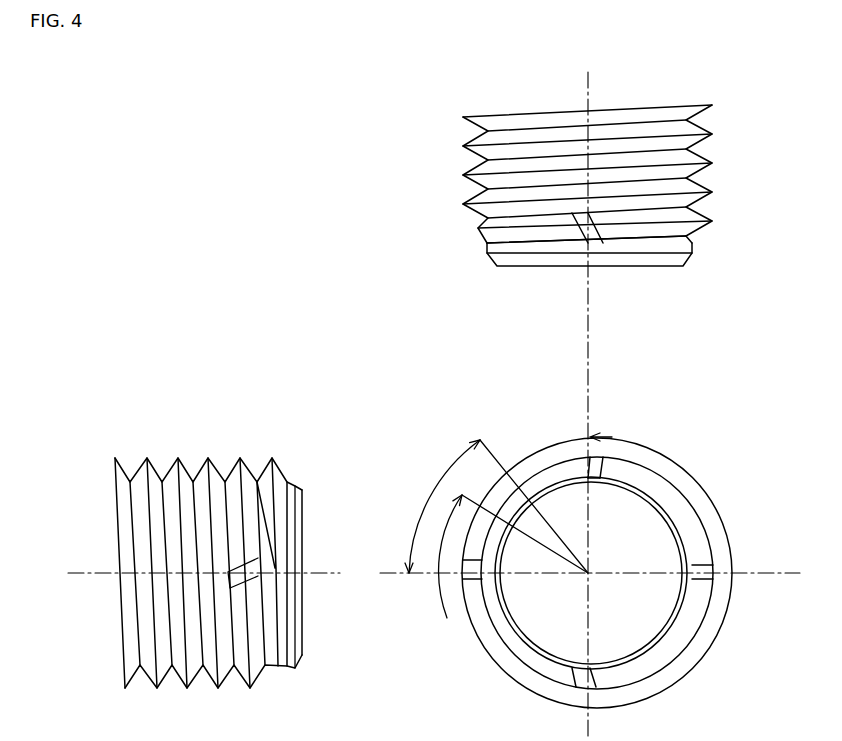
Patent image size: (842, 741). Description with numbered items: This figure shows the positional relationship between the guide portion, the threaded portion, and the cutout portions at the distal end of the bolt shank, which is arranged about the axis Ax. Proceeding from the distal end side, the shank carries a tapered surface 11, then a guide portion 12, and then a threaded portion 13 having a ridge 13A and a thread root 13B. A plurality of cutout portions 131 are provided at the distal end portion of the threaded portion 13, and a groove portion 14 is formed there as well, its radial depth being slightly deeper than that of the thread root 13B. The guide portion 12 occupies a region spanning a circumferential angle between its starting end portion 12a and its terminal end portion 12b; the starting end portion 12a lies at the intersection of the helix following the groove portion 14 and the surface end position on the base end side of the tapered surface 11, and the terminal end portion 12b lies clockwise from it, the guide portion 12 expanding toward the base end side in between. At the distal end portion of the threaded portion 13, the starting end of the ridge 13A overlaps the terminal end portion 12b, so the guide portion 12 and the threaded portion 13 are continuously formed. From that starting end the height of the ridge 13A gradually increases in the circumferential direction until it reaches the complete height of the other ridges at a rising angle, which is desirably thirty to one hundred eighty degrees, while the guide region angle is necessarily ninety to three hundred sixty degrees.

The tapered surface 11 is at (543, 258).
The guide portion 12 is at (662, 250).
The starting end portion 12a is at (585, 243).
The terminal end portion 12b is at (278, 507).
The threaded portion 13 is at (414, 397).
The ridge 13A is at (465, 203).
The thread root 13B is at (478, 188).
The cutout portions 131 is at (597, 242).
The groove portion 14 is at (695, 238).
The axis Ax is at (417, 394).